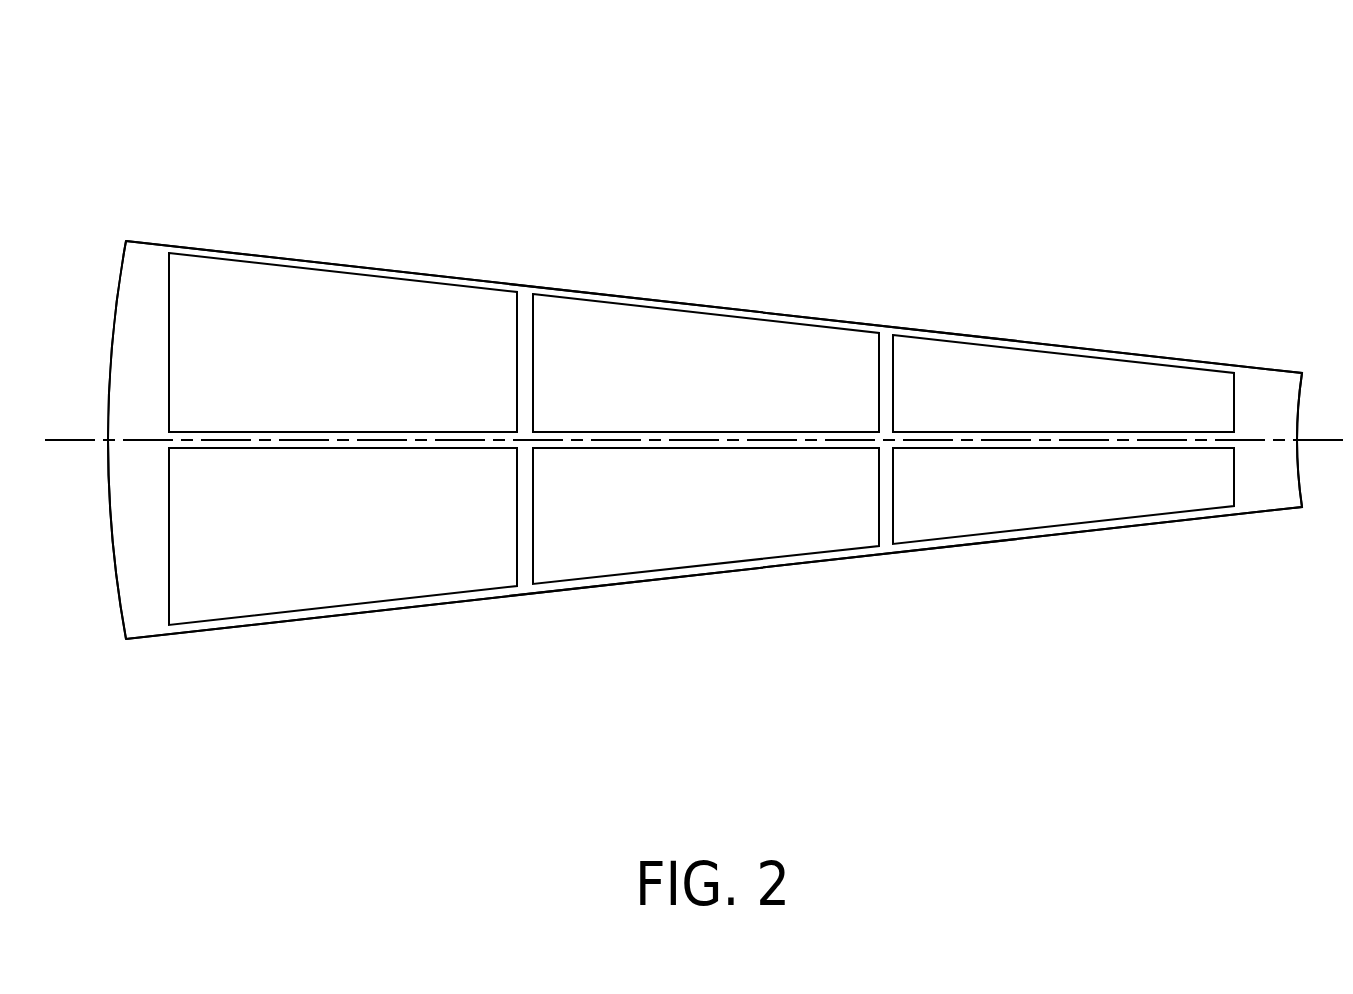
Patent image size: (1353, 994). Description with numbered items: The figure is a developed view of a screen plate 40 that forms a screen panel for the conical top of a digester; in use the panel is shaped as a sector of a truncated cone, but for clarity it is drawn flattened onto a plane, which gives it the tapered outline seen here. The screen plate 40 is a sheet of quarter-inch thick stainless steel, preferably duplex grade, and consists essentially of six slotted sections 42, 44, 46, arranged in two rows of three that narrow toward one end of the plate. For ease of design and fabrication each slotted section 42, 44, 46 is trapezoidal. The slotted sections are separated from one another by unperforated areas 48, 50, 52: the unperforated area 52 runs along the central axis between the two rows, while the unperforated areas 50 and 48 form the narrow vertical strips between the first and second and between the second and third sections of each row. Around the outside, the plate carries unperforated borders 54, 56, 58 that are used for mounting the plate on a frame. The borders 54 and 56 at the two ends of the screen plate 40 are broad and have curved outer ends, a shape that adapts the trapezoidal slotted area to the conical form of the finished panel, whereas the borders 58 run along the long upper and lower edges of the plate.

The screen plate 40 is at (186, 148).
The slotted section 42 is at (352, 372).
The slotted section 44 is at (734, 397).
The slotted section 46 is at (1072, 410).
The unperforated area 48 is at (886, 538).
The unperforated area 50 is at (525, 552).
The unperforated area 52 is at (272, 445).
The unperforated border 54 is at (1263, 483).
The unperforated border 56 is at (148, 598).
The unperforated border 58 is at (1076, 349).